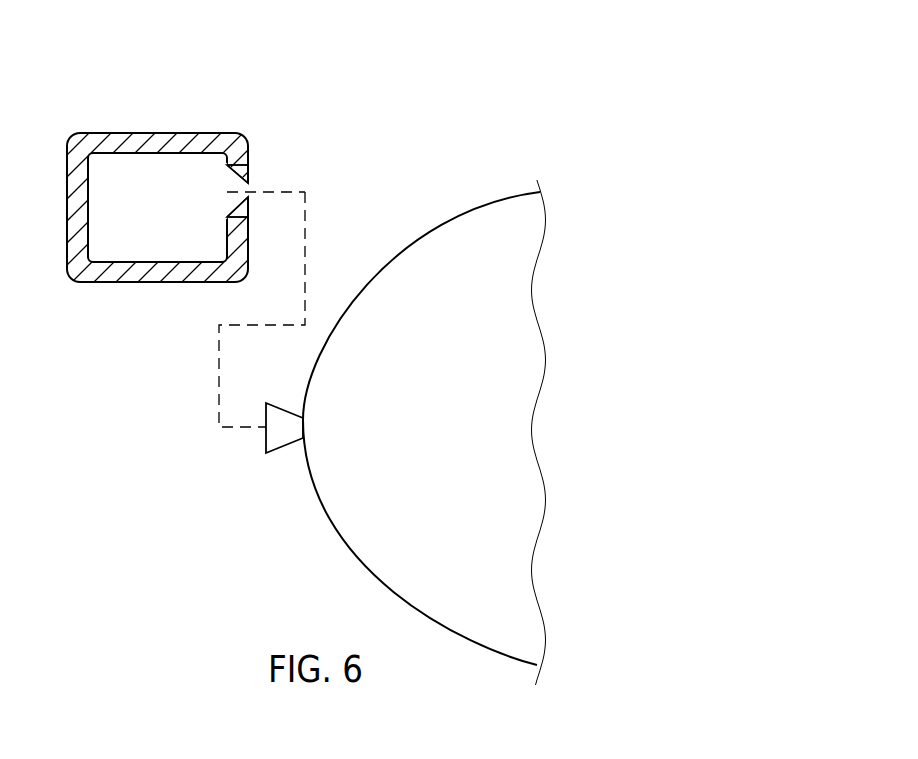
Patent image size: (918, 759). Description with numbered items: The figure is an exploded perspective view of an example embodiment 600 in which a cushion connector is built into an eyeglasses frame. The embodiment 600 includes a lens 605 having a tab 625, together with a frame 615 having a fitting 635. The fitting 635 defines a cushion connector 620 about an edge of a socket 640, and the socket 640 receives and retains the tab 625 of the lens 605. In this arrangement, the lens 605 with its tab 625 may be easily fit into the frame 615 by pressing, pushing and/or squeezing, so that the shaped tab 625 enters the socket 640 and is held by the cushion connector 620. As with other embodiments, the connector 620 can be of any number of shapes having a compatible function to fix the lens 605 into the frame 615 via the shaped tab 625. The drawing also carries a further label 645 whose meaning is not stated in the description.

The acoustic system 600 is at (422, 124).
The curved surface 605 is at (498, 181).
The housing 615 is at (175, 118).
The wedge / wall portion 620 is at (249, 184).
The horn / transducer 625 is at (280, 470).
The bottom wall 635 is at (147, 298).
The top wall 640 is at (119, 137).
The aperture / slit 645 is at (264, 185).